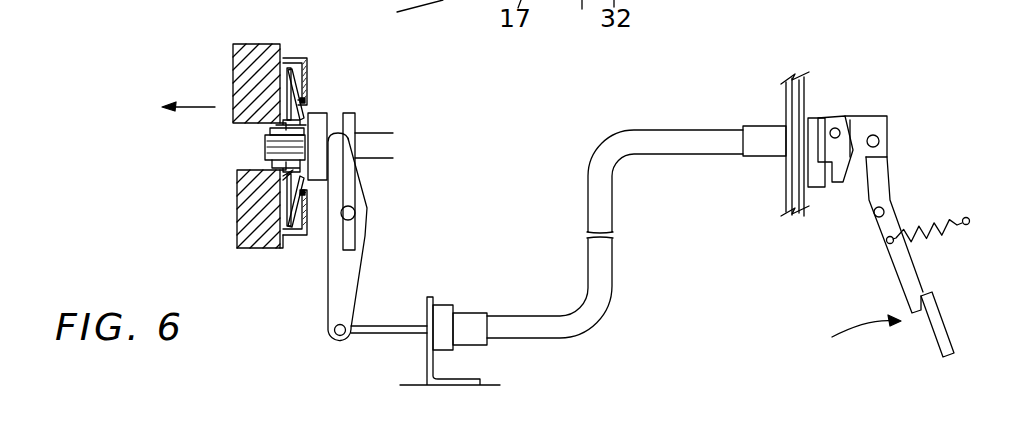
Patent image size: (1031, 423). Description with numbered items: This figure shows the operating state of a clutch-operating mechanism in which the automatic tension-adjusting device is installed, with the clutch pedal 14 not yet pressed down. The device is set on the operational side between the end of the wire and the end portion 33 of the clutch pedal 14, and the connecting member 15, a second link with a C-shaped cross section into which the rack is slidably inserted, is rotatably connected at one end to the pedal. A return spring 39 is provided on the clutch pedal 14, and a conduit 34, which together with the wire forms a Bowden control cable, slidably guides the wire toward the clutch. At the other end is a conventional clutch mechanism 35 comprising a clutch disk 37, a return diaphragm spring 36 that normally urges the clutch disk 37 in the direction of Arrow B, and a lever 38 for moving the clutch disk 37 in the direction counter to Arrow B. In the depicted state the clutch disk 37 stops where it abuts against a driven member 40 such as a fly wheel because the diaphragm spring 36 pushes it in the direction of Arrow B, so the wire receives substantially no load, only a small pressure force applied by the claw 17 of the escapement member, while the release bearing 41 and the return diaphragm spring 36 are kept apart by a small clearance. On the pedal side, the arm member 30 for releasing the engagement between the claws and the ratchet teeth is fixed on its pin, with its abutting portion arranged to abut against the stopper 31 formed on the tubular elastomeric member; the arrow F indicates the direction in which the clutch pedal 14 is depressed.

The clutch pedal 14 is at (908, 276).
The connecting member 15 is at (867, 128).
The claw 17 is at (520, 2).
The arm member 30 is at (837, 184).
The stopper 31 is at (818, 190).
The end portion of the clutch pedal 33 is at (878, 168).
The conduit 34 is at (675, 140).
The clutch mechanism 35 is at (317, 83).
The return diaphragm spring 36 is at (304, 111).
The clutch disk 37 is at (282, 110).
The lever 38 is at (350, 259).
The return spring 39 is at (942, 222).
The driven member 40 is at (283, 59).
The release bearing 41 is at (282, 178).
The Arrow B is at (197, 108).
The pedal force direction F is at (870, 338).